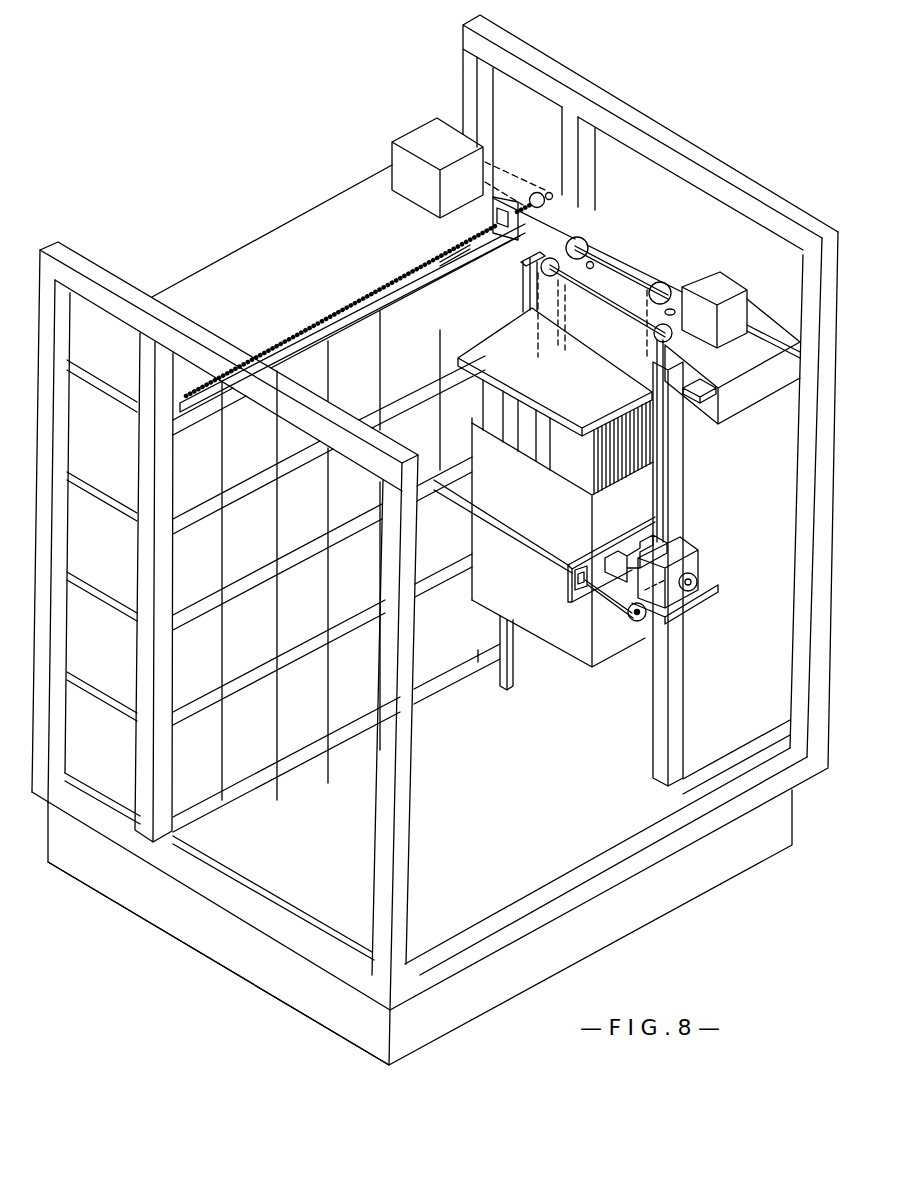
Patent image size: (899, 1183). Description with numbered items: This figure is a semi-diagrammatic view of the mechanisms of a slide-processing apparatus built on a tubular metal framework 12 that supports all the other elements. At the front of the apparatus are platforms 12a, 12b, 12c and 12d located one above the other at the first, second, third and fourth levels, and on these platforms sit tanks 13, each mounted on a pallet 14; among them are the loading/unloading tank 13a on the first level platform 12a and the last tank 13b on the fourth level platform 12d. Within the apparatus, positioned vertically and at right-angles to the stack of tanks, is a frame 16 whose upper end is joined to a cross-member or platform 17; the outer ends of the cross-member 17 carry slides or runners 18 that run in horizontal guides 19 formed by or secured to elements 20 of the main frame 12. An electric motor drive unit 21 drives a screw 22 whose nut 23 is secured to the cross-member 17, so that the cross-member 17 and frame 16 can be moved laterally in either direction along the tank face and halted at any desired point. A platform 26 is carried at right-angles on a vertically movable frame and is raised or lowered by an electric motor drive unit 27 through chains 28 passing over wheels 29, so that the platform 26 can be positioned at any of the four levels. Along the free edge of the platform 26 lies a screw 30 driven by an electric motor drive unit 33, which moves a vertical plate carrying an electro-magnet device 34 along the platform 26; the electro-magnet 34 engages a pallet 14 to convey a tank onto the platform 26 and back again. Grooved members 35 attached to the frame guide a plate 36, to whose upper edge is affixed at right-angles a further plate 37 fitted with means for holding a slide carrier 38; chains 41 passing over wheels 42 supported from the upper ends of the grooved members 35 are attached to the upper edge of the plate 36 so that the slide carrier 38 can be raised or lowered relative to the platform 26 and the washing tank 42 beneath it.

The framework 12 is at (572, 75).
The first level platform 12a is at (353, 737).
The second level platform 12b is at (312, 658).
The third level platform 12c is at (208, 617).
The fourth level platform 12d is at (260, 490).
The tank 13 is at (340, 382).
The loading/unloading tank 13a is at (437, 649).
The last tank 13b is at (455, 327).
The pallet 14 is at (460, 665).
The frame 16 is at (507, 673).
The cross-member or platform 17 is at (615, 243).
The slides or runners 18 is at (463, 255).
The horizontal guides 19 is at (297, 340).
The elements of the main frame 20 is at (213, 410).
The electric motor drive unit 21 is at (420, 145).
The screw 22 is at (425, 267).
The nut 23 is at (490, 215).
The platform 26 is at (543, 556).
The electric motor drive unit 27 is at (722, 290).
The chains 28 is at (645, 310).
The wheels 29 is at (585, 245).
The screw 30 is at (513, 540).
The electric motor drive unit 33 is at (692, 568).
The electro-magnet device 34 is at (672, 532).
The grooved members 35 is at (526, 262).
The plate 36 is at (608, 357).
The further plate 37 is at (539, 392).
The slide carrier 38 is at (548, 420).
The chains 41 is at (553, 300).
The wheels 42 is at (504, 609).